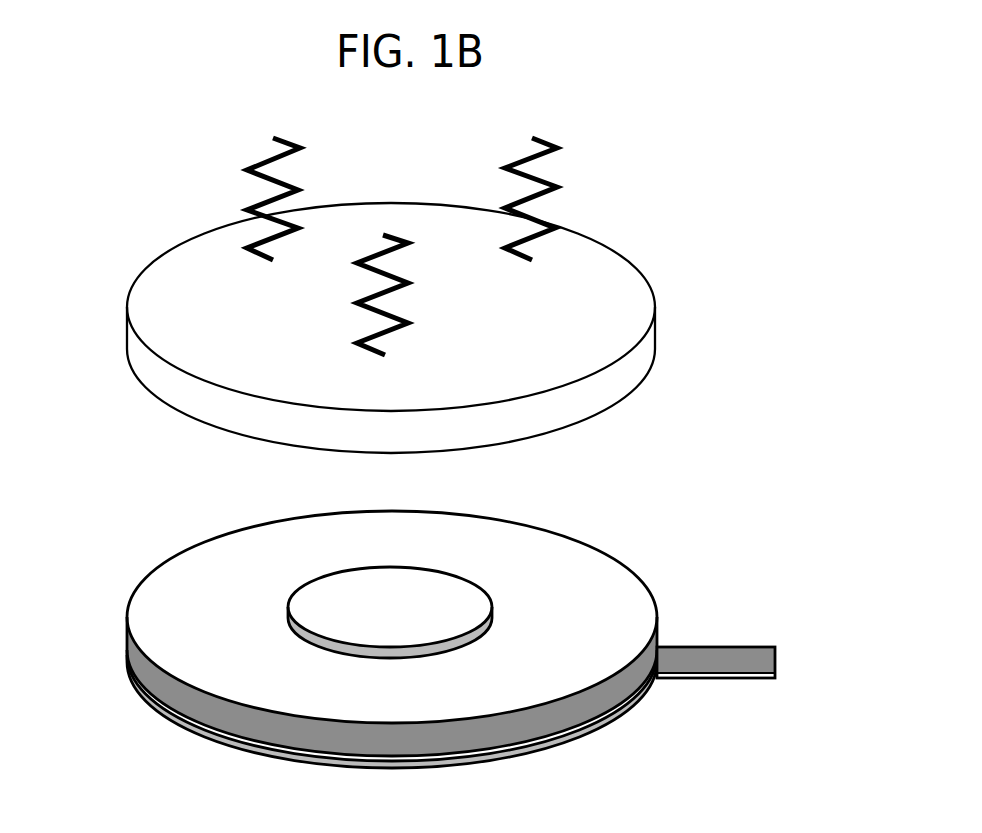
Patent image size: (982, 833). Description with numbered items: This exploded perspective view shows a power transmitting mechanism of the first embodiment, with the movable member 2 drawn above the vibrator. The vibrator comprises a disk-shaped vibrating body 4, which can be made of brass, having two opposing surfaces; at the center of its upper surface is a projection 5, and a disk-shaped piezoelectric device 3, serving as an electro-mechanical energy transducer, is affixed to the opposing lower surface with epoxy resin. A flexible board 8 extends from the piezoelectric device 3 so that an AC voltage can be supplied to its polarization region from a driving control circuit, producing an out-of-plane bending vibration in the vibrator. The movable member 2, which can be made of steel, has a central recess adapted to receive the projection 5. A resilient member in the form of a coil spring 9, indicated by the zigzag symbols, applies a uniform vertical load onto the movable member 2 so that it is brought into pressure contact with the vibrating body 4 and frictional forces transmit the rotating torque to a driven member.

The movable member 2 is at (647, 357).
The piezoelectric device 3 is at (587, 727).
The vibrating body 4 is at (603, 590).
The projection 5 is at (452, 595).
The flexible board 8 is at (775, 662).
The coil spring 9 is at (247, 169).